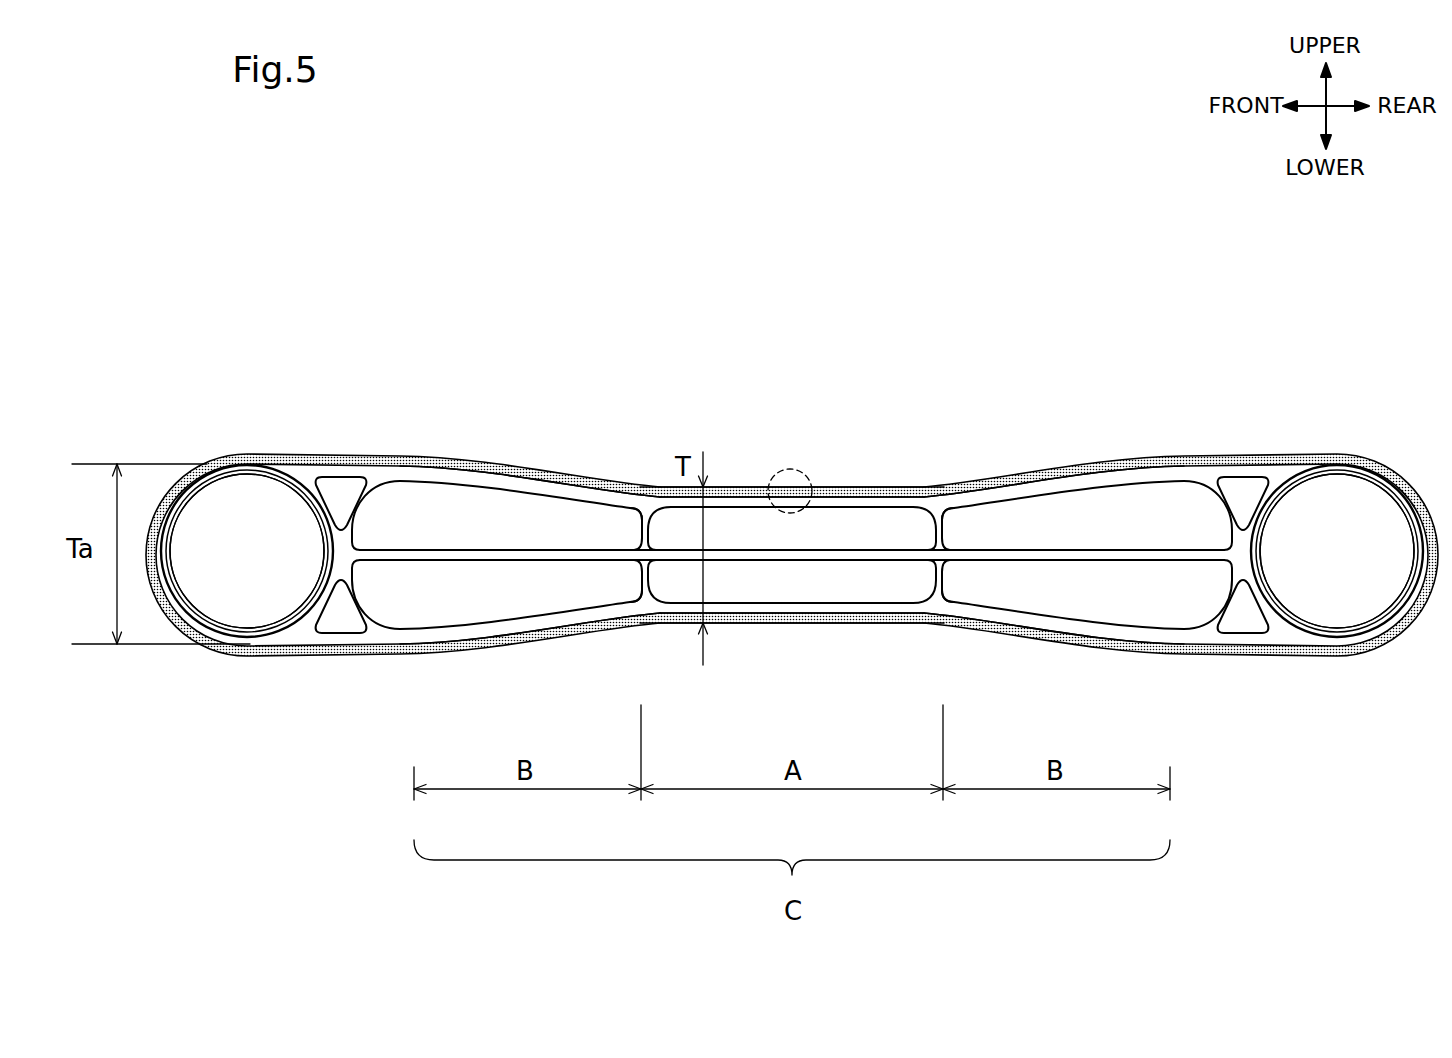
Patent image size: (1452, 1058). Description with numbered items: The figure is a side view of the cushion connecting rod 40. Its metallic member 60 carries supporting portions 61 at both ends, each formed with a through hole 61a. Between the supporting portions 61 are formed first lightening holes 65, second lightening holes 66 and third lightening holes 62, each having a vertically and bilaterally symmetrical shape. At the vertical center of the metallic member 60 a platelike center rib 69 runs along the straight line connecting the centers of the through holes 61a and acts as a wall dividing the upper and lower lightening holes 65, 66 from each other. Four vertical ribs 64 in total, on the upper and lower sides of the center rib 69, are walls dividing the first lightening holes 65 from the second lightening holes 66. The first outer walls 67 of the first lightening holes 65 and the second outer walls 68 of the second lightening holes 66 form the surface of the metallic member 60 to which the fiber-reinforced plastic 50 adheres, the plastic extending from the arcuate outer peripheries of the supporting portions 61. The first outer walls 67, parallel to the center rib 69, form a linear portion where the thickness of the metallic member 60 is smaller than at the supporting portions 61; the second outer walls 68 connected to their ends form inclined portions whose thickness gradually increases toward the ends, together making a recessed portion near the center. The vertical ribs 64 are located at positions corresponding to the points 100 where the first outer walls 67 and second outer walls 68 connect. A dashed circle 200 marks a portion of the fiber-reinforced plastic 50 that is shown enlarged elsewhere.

The cushion connecting rod 40 is at (591, 374).
The fiber-reinforced plastic 50 is at (772, 508).
The metallic member 60 is at (790, 612).
The supporting portion 61 is at (247, 468).
The through hole 61a is at (233, 545).
The third lightening hole 62 is at (341, 500).
The vertical rib 64 is at (643, 530).
The first lightening hole 65 is at (830, 537).
The second lightening hole 66 is at (495, 530).
The first outer wall 67 is at (728, 500).
The second outer wall 68 is at (450, 478).
The center rib 69 is at (752, 553).
The point 100 is at (648, 490).
The dashed circle 200 is at (810, 478).